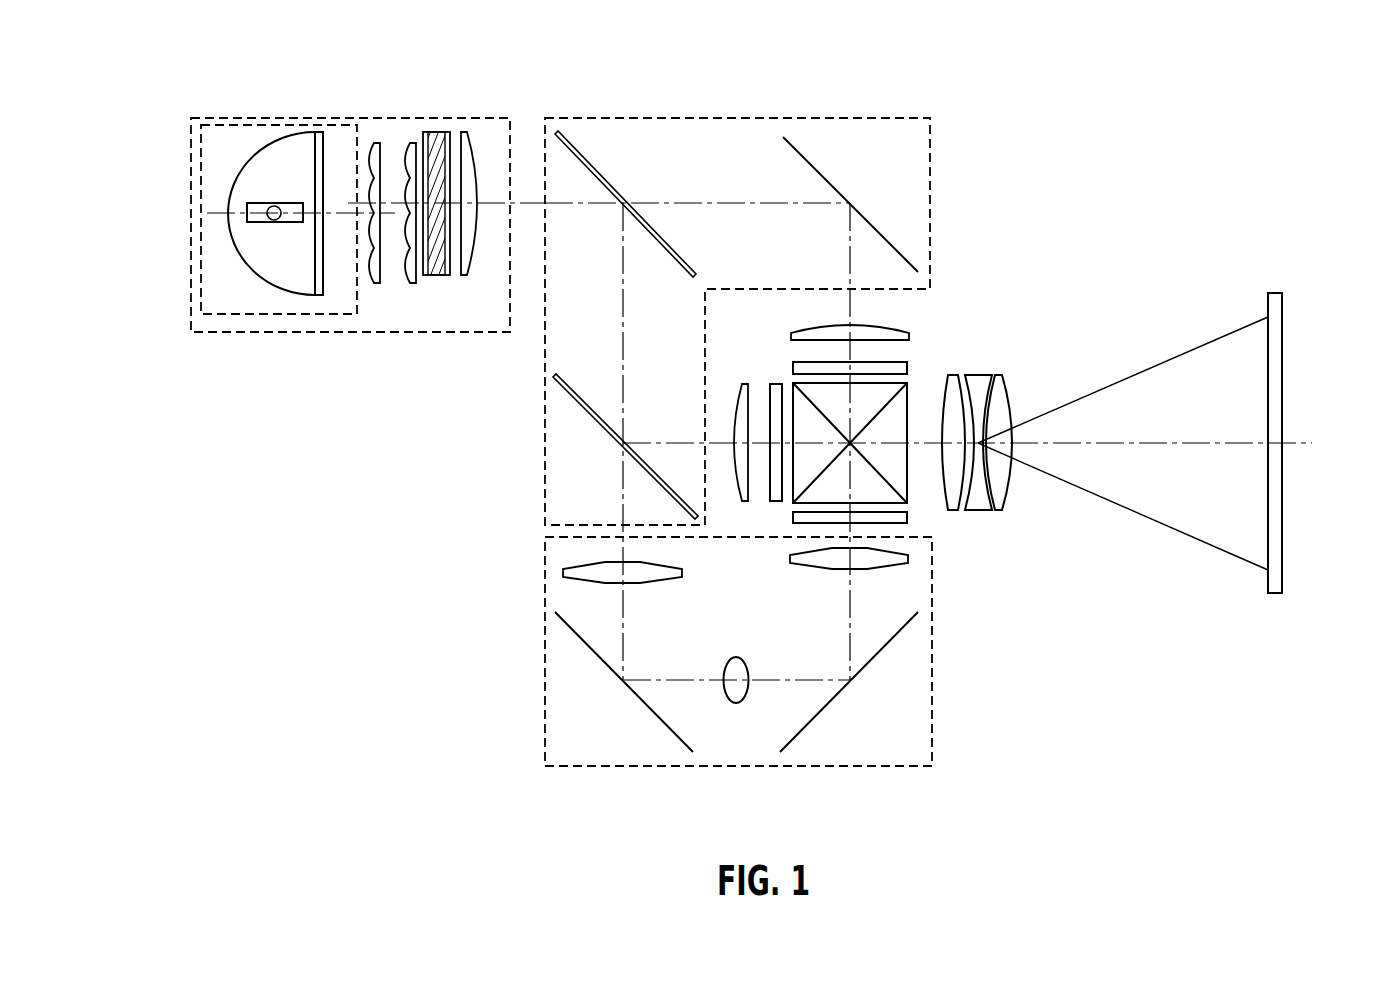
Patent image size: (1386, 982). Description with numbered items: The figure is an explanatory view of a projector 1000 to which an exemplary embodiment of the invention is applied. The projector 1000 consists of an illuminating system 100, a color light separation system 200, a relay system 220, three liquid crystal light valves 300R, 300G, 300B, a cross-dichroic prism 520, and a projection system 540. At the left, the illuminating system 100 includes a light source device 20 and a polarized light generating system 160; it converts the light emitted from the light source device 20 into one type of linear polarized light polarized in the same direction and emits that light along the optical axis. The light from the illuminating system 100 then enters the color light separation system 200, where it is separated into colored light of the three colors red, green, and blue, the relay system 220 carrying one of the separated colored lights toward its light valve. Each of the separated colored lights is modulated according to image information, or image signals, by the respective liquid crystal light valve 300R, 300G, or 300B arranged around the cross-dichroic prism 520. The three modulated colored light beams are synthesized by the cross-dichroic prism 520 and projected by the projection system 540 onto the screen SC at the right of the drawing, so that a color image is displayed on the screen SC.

The projector 1000 is at (182, 58).
The illuminating system 100 is at (330, 118).
The light source device 20 is at (291, 314).
The polarized light generating system 160 is at (437, 132).
The color light separation system 200 is at (611, 118).
The relay system 220 is at (543, 620).
The liquid crystal light valve 300R is at (791, 366).
The liquid crystal light valve 300G is at (772, 384).
The liquid crystal light valve 300B is at (908, 518).
The cross-dichroic prism 520 is at (908, 400).
The projection system 540 is at (980, 373).
The screen SC is at (1282, 357).